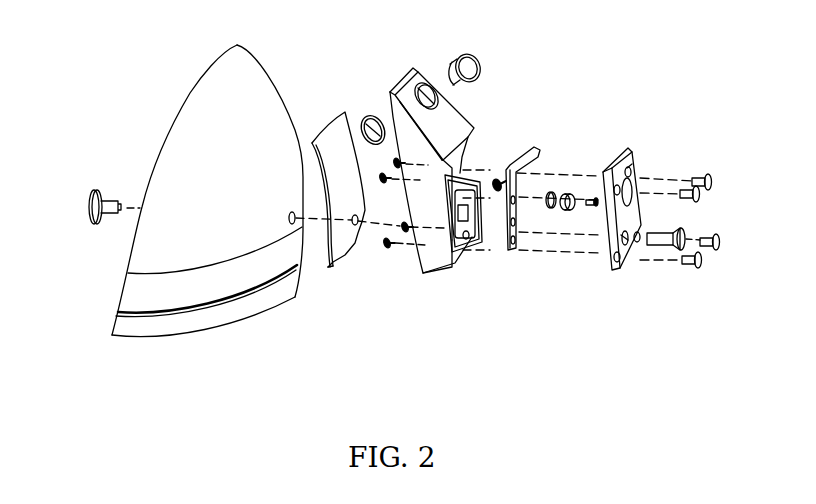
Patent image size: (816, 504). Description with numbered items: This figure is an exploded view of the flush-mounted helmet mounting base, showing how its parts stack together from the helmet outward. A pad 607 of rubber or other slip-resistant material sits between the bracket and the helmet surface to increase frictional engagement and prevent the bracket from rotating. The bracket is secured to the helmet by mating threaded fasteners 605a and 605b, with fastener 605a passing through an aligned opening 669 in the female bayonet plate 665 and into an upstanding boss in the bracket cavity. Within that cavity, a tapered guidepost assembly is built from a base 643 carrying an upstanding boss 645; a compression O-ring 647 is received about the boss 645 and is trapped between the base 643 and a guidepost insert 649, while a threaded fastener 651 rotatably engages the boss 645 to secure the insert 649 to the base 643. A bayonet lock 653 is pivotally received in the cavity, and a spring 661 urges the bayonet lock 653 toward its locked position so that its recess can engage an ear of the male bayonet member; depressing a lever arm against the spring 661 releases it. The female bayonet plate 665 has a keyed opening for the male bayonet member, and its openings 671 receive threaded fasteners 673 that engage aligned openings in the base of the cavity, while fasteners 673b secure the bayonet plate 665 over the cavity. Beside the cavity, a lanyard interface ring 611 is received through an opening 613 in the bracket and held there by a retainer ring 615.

The threaded fastener 605a is at (662, 235).
The threaded fastener 605b is at (95, 193).
The pad 607 is at (332, 263).
The lanyard interface ring 611 is at (480, 68).
The opening 613 is at (422, 87).
The retainer ring 615 is at (363, 118).
The base 643 is at (440, 225).
The upstanding boss 645 is at (460, 247).
The compression O-ring 647 is at (551, 193).
The guidepost insert 649 is at (567, 197).
The threaded fastener 651 is at (588, 200).
The bayonet lock 653 is at (521, 163).
The spring 661 is at (495, 190).
The female bayonet plate 665 is at (613, 272).
The aligned opening 669 is at (623, 243).
The openings 671 is at (633, 172).
The threaded fasteners 673 is at (755, 255).
The fasteners 673b is at (386, 238).